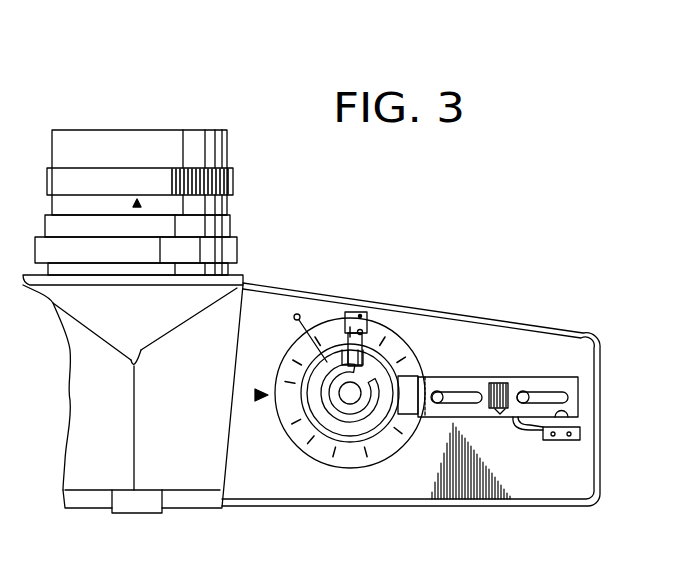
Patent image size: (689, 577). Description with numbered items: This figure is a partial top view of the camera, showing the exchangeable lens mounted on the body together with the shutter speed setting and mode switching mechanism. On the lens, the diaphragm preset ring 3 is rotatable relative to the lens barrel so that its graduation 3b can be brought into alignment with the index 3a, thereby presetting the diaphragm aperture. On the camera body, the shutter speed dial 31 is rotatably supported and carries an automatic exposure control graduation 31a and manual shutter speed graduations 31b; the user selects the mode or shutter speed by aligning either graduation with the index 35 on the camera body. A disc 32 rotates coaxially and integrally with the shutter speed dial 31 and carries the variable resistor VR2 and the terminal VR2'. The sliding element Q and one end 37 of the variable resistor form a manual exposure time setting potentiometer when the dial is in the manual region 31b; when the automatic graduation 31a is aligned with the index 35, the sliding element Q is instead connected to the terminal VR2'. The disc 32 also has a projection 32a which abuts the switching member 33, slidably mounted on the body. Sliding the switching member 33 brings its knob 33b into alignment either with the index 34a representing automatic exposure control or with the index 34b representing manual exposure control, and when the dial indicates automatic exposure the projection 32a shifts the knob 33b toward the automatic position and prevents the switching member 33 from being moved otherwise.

The diaphragm preset ring 3 is at (233, 182).
The index 3a is at (142, 204).
The graduation 3b is at (105, 182).
The shutter speed dial 31 is at (336, 462).
The automatic exposure control graduation 31a is at (288, 408).
The manual shutter speed graduation 31b is at (377, 448).
The disc 32 is at (327, 437).
The projection 32a is at (410, 392).
The switching member 33 is at (460, 385).
The knob 33b is at (515, 390).
The index representing automatic exposure control 34a is at (507, 443).
The index representing manual exposure control 34b is at (468, 442).
The index 35 is at (258, 389).
The one end of the variable resistor 37 is at (325, 352).
The sliding element Q is at (344, 326).
The variable resistor VR2 is at (375, 423).
The terminal VR2' is at (402, 320).